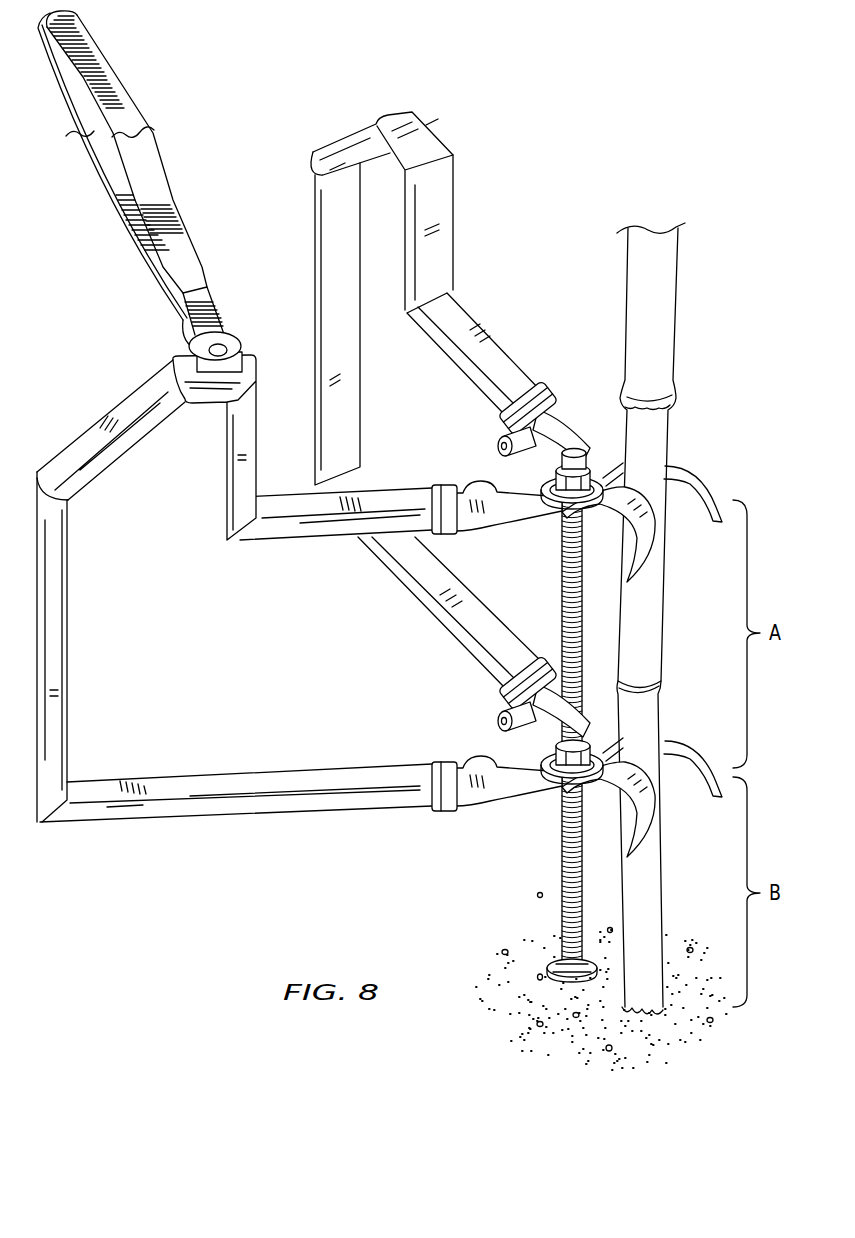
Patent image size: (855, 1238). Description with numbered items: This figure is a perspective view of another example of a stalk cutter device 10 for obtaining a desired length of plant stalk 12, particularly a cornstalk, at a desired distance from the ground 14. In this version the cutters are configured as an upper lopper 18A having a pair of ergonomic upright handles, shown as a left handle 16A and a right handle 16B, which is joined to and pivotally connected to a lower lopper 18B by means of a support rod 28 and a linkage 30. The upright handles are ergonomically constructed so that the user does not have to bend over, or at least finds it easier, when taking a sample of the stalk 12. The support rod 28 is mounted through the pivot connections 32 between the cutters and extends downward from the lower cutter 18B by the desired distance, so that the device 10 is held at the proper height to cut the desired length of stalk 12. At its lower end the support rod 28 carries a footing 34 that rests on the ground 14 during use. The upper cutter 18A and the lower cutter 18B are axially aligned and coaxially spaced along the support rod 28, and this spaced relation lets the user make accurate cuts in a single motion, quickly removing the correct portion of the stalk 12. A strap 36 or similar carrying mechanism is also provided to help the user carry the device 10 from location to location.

The stalk cutter device 10 is at (577, 128).
The plant stalk 12 is at (657, 298).
The ground 14 is at (525, 1013).
The left handle 16A is at (352, 148).
The right handle 16B is at (125, 405).
The upper cutter 18A is at (470, 323).
The lower cutter 18B is at (412, 590).
The support rod 28 is at (558, 840).
The linkage 30 is at (318, 232).
The pivot connections 32 is at (603, 440).
The footing 34 is at (557, 958).
The strap 36 is at (150, 165).